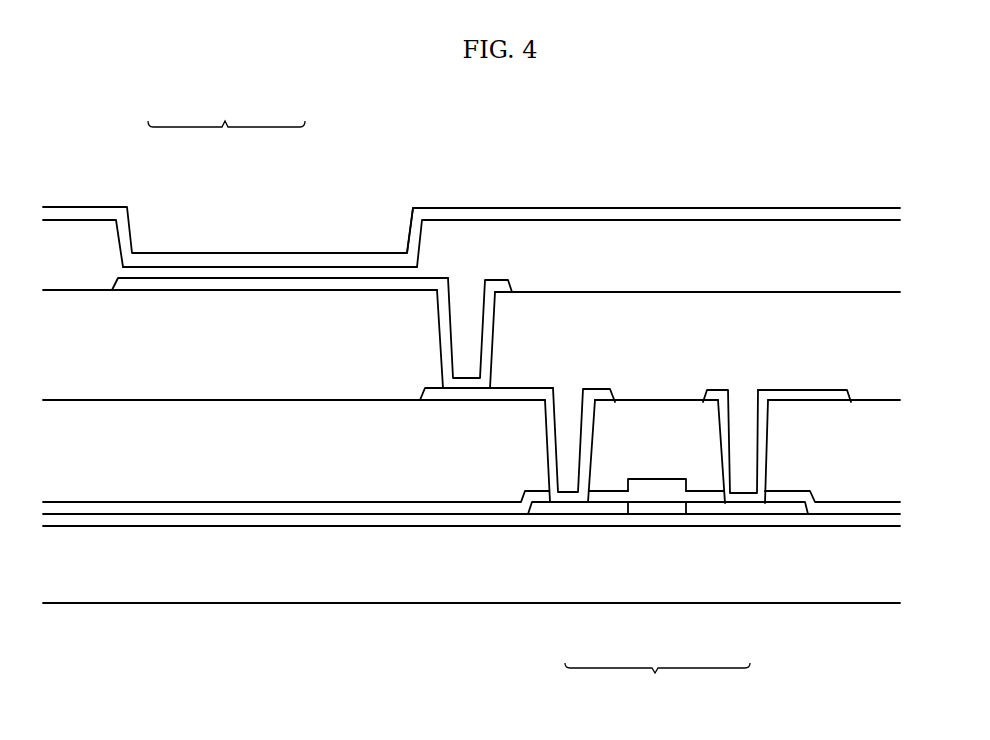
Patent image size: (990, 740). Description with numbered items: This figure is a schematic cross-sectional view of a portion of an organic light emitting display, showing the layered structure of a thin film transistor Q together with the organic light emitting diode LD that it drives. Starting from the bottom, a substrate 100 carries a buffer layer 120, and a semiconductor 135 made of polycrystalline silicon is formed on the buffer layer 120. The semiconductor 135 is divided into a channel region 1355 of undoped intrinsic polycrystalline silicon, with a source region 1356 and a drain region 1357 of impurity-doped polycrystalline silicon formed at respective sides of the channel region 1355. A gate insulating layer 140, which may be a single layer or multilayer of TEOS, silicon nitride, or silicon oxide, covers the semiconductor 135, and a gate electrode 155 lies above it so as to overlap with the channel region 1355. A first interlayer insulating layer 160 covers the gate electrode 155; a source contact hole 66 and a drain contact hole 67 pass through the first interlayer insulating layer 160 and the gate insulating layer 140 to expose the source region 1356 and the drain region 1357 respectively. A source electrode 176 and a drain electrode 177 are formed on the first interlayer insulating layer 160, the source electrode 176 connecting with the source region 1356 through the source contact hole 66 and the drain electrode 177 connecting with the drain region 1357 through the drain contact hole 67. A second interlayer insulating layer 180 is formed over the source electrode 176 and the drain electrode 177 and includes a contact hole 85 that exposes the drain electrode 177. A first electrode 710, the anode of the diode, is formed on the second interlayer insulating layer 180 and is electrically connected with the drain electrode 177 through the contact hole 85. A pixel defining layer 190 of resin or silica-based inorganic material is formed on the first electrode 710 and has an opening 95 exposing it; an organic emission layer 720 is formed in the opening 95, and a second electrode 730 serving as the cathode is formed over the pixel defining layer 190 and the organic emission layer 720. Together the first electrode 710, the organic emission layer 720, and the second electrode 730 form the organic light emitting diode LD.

The pixel defining layer 190 is at (78, 237).
The first electrode 710 is at (170, 287).
The organic emission layer 720 is at (225, 273).
The second electrode 730 is at (285, 263).
The organic light emitting diode LD is at (226, 111).
The opening 95 is at (420, 241).
The contact hole 85 is at (490, 313).
The second interlayer insulating layer 180 is at (248, 355).
The drain electrode 177 is at (468, 393).
The drain contact hole 67 is at (592, 422).
The source contact hole 66 is at (767, 422).
The source electrode 176 is at (832, 395).
The first interlayer insulating layer 160 is at (98, 467).
The gate electrode 155 is at (668, 487).
The gate insulating layer 140 is at (397, 505).
The semiconductor 135 is at (657, 684).
The drain region 1357 is at (570, 510).
The channel region 1355 is at (660, 508).
The source region 1356 is at (748, 510).
The buffer layer 120 is at (322, 520).
The substrate 100 is at (167, 577).
The thin film transistor Q is at (866, 451).